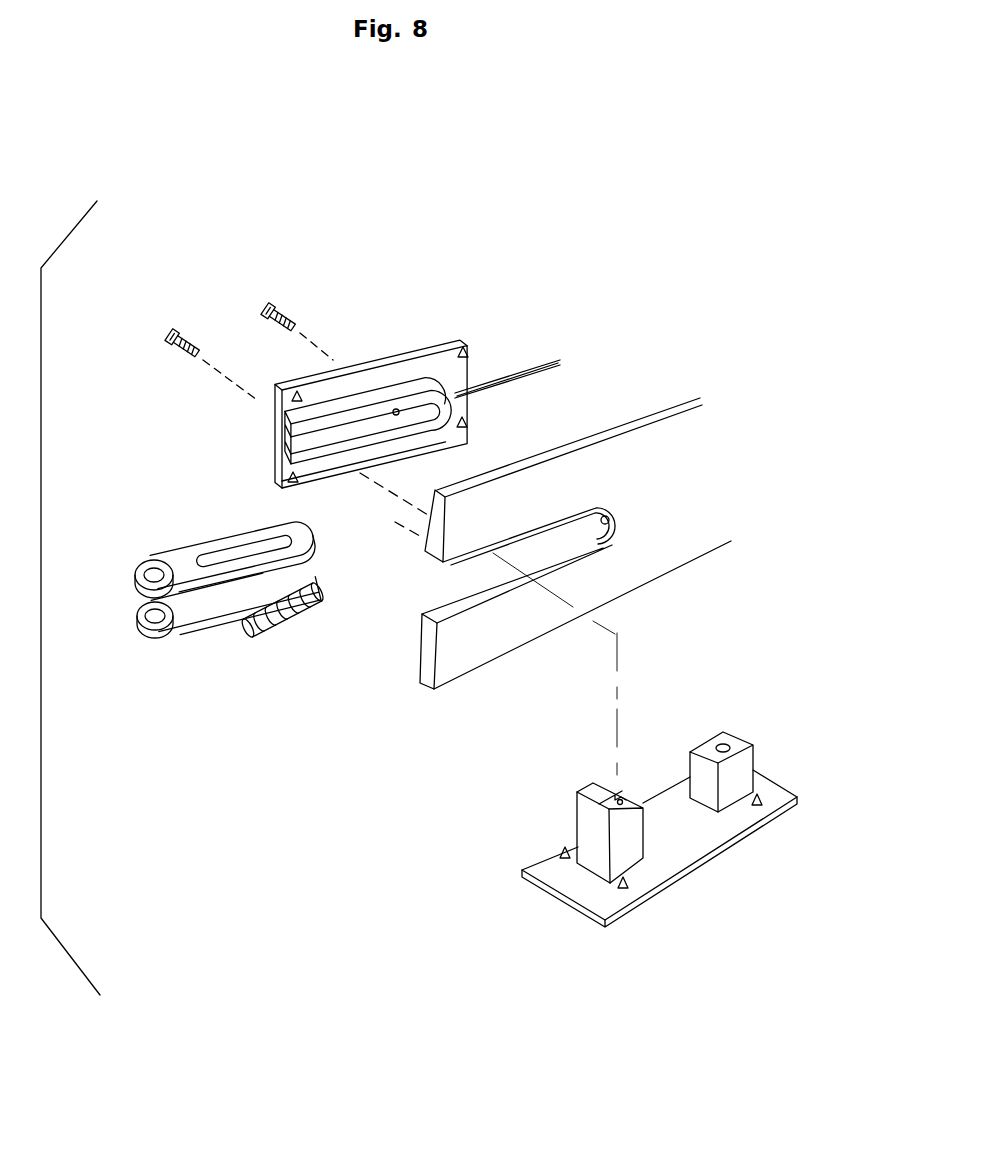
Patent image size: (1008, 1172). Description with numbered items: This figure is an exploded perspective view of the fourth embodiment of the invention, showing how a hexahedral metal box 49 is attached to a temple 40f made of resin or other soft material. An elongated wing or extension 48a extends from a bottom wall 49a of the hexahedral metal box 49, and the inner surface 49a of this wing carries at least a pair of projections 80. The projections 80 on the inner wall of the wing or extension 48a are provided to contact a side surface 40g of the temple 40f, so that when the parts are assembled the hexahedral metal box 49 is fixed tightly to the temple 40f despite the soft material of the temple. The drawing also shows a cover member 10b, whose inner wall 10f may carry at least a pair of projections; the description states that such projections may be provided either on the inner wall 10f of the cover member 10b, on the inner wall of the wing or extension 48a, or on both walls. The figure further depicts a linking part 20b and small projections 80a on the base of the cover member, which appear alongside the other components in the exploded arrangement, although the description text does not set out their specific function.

The projection 80 is at (283, 409).
The hexahedral metal box 49 is at (275, 443).
The bottom wall 49a is at (362, 380).
The elongated wing or extension 48a is at (398, 404).
The link arm 20b is at (197, 560).
The side surface 40g is at (418, 645).
The temple 40f is at (690, 481).
The inner wall 10f is at (568, 872).
The cover member 10b is at (583, 912).
The screw hole 80a is at (757, 812).